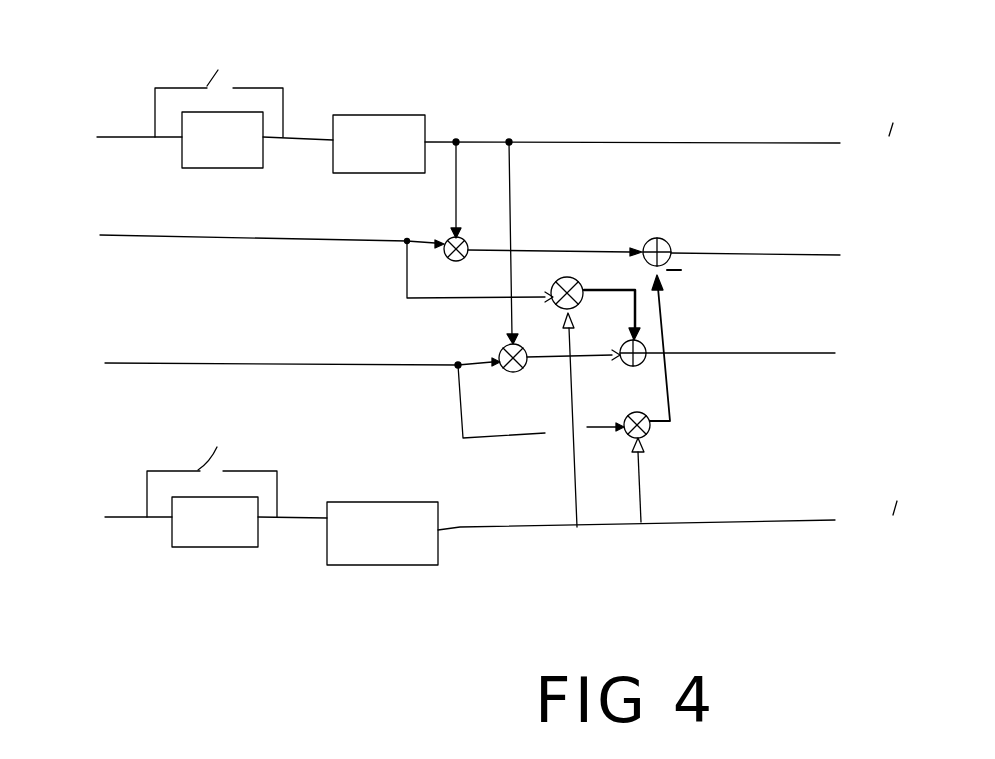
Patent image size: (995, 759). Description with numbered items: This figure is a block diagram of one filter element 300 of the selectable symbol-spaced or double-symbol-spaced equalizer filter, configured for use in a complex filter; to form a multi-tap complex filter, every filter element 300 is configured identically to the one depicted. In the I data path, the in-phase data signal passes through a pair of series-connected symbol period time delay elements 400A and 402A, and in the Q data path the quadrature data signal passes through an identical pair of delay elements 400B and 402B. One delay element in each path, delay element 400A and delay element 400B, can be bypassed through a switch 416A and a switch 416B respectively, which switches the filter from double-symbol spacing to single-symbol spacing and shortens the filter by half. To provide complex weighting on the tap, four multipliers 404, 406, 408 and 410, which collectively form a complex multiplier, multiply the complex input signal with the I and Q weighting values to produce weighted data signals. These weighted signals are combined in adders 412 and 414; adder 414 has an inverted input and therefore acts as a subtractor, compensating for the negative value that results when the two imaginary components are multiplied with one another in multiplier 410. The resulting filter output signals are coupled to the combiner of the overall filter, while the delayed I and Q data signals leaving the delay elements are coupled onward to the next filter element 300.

The filter element 300 is at (637, 59).
The symbol period time delay element 400A is at (205, 168).
The symbol period time delay element 402A is at (370, 173).
The symbol period time delay element 400B is at (230, 547).
The symbol period time delay element 402B is at (383, 565).
The multiplier 404 is at (452, 261).
The multiplier 406 is at (549, 288).
The multiplier 408 is at (516, 372).
The multiplier 410 is at (649, 434).
The adder 412 is at (632, 366).
The adder 414 is at (663, 241).
The switch 416A is at (233, 76).
The switch 416B is at (230, 443).